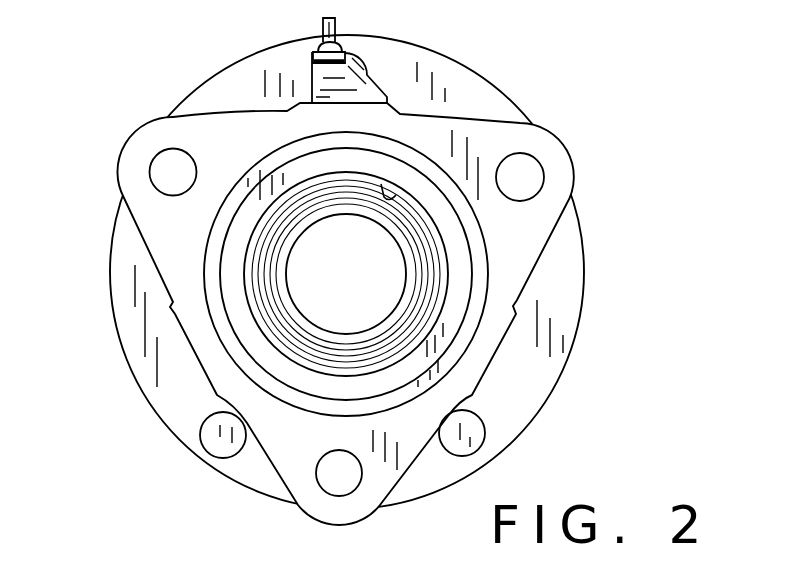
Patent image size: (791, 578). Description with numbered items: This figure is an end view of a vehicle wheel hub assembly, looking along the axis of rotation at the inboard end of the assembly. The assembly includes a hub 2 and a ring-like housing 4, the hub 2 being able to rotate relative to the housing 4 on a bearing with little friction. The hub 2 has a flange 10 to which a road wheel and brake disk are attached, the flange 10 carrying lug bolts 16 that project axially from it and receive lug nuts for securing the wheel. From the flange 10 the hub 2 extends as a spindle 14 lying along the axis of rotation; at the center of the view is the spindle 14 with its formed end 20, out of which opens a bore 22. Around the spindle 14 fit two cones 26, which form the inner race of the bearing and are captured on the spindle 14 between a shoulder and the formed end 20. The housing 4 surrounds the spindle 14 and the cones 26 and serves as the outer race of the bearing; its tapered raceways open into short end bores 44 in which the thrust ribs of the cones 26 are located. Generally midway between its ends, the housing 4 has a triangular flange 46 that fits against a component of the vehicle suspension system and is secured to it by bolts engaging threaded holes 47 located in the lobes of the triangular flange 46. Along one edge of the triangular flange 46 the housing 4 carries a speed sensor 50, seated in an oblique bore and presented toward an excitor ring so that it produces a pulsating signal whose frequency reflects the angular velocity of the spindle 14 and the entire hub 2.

The hub 2 is at (347, 271).
The housing 4 is at (200, 267).
The flange 10 is at (570, 297).
The spindle 14 is at (410, 281).
The lug bolts 16 is at (467, 433).
The formed end 20 is at (270, 320).
The bore 22 is at (300, 225).
The cones 26 is at (250, 305).
The end bores 44 is at (383, 186).
The triangular flange 46 is at (535, 233).
The threaded holes 47 is at (520, 177).
The speed sensor 50 is at (335, 72).